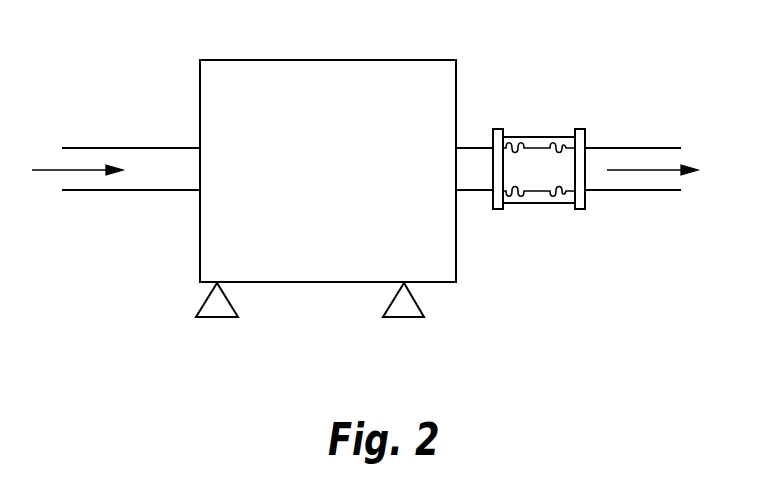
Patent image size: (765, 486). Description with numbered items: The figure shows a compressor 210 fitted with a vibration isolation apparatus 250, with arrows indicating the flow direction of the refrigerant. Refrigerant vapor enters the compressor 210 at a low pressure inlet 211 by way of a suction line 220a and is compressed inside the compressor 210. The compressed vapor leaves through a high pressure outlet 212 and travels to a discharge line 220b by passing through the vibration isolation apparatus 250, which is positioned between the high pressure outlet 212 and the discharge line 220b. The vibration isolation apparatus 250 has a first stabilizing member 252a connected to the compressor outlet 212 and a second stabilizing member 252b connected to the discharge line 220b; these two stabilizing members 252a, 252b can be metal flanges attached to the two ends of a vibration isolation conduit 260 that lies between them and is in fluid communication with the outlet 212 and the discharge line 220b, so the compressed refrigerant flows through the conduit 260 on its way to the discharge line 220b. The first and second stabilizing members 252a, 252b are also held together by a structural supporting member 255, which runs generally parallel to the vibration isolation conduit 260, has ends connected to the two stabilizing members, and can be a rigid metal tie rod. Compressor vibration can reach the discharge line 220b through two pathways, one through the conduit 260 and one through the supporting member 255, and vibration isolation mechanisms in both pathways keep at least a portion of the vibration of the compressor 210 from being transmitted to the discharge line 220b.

The compressor 210 is at (449, 285).
The low pressure inlet 211 is at (199, 170).
The high pressure outlet 212 is at (457, 170).
The suction line 220a is at (134, 148).
The discharge line 220b is at (645, 148).
The vibration isolation apparatus 250 is at (544, 177).
The first stabilizing member 252a is at (497, 210).
The second stabilizing member 252b is at (578, 210).
The structural supporting member 255 is at (543, 206).
The vibration isolation conduit 260 is at (537, 147).